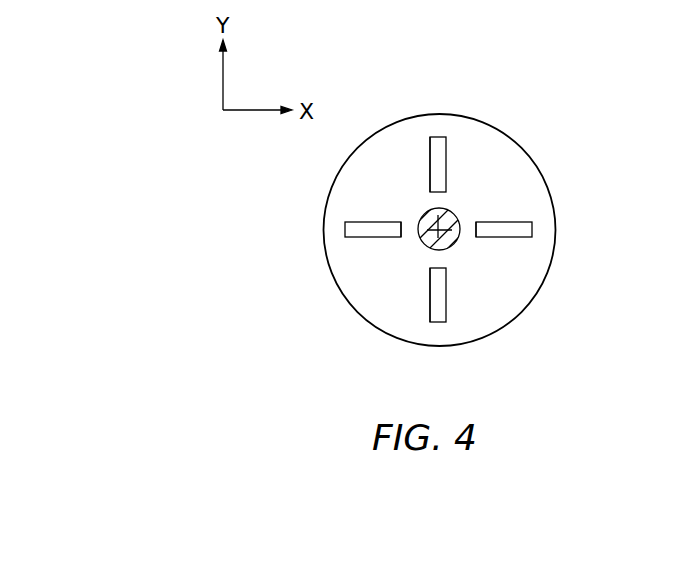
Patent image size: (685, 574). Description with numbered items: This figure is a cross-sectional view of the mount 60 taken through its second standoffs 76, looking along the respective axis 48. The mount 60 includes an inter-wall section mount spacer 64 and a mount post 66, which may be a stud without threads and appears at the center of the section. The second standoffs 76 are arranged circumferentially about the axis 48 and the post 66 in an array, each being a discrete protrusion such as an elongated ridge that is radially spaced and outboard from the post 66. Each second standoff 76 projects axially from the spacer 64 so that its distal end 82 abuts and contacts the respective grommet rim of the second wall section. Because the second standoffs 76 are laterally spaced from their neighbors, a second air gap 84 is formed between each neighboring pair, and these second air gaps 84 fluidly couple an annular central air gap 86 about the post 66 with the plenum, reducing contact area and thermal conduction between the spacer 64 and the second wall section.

The mount 60 is at (499, 207).
The inter-wall section mount spacer 64 is at (566, 121).
The second standoffs 76 is at (452, 159).
The distal end 82 is at (430, 163).
The second air gap 84 is at (387, 157).
The mount post 66 is at (462, 207).
The axis 48 is at (451, 241).
The central air gap 86 is at (437, 260).